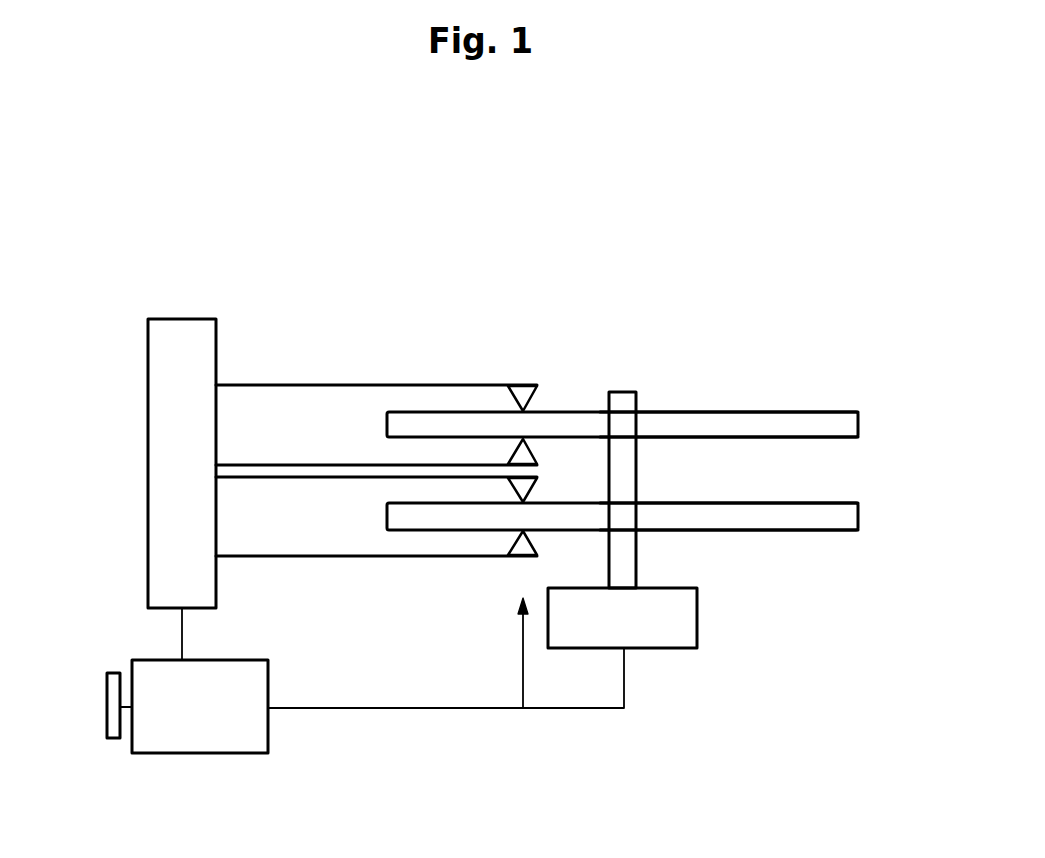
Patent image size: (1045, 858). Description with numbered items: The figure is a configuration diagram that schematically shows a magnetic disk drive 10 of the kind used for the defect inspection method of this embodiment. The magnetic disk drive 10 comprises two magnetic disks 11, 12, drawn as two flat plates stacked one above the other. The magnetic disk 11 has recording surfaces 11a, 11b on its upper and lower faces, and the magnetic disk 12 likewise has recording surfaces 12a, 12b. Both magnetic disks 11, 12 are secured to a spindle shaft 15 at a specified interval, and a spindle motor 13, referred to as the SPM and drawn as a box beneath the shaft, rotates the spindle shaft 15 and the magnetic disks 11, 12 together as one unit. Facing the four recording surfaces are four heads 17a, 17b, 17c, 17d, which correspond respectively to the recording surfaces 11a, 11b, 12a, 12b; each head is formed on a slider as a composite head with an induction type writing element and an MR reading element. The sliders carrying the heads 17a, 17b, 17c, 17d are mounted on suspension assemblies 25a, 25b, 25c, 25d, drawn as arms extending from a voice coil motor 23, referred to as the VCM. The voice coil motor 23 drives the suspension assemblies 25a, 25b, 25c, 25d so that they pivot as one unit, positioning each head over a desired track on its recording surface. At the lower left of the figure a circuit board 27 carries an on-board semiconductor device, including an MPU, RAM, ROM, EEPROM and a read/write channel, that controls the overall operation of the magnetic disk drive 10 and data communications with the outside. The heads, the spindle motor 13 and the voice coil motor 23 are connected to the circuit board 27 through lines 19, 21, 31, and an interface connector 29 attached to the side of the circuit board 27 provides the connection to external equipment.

The magnetic disk drive 10 is at (612, 282).
The magnetic disk 11 is at (862, 426).
The recording surface 11a is at (832, 410).
The recording surface 11b is at (836, 440).
The magnetic disk 12 is at (860, 520).
The recording surface 12a is at (852, 501).
The recording surface 12b is at (845, 532).
The spindle motor 13 is at (698, 620).
The spindle shaft 15 is at (622, 391).
The head 17a is at (540, 396).
The head 17b is at (537, 449).
The head 17c is at (538, 490).
The head 17d is at (536, 542).
The line 19 is at (520, 672).
The line 21 is at (626, 682).
The voice coil motor 23 is at (176, 318).
The suspension assembly 25a is at (290, 384).
The suspension assembly 25b is at (284, 464).
The suspension assembly 25c is at (282, 480).
The suspension assembly 25d is at (290, 558).
The circuit board 27 is at (214, 756).
The interface connector 29 is at (113, 740).
The line 31 is at (180, 640).